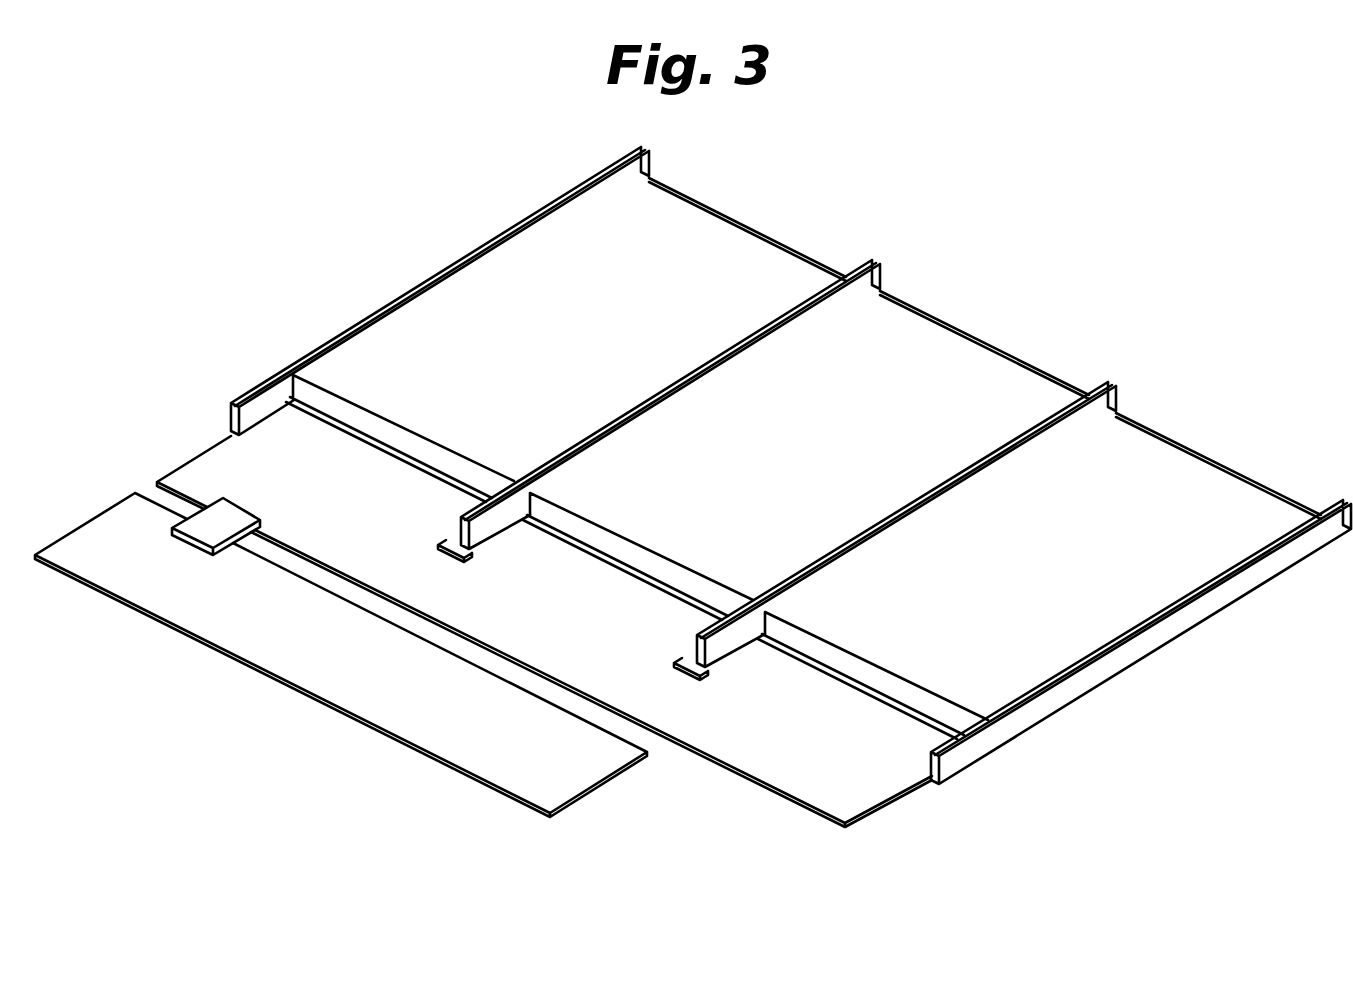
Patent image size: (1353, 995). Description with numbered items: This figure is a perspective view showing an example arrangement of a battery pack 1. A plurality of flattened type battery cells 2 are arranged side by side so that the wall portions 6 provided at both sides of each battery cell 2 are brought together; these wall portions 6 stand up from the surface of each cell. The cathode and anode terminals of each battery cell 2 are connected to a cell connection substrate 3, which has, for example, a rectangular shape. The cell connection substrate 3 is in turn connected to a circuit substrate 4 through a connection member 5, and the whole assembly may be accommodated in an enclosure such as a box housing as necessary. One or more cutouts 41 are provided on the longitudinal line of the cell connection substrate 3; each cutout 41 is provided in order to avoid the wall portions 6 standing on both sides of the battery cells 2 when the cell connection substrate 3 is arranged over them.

The battery pack 1 is at (1250, 195).
The battery cell 2 is at (707, 248).
The cell connection substrate 3 is at (883, 805).
The circuit substrate 4 is at (567, 768).
The connection member 5 is at (213, 525).
The wall portion 6 is at (738, 632).
The cutout 41 is at (437, 552).